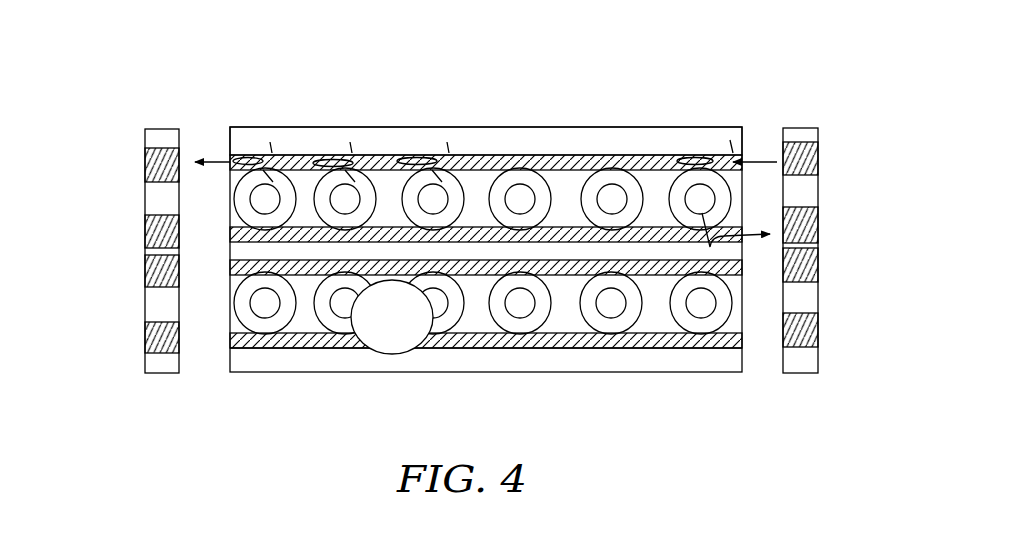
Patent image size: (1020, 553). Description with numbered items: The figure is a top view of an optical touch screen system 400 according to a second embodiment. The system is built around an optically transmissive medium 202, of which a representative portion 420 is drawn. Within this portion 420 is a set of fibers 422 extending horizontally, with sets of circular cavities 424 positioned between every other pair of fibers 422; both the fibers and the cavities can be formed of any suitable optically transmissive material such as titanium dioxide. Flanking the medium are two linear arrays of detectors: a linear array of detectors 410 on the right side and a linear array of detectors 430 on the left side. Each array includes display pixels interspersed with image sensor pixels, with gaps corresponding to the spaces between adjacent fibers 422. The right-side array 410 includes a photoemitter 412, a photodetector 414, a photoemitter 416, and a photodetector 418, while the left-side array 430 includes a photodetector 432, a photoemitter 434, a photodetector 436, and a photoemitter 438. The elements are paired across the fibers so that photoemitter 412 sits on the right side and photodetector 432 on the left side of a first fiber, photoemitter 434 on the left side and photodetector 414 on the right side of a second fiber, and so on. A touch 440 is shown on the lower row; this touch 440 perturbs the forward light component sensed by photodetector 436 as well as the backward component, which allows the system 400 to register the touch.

The optical touch screen system 400 is at (124, 39).
The optically transmissive medium 202 is at (707, 372).
The linear array of detectors 410 is at (798, 128).
The photoemitter 412 is at (812, 162).
The photodetector 414 is at (812, 225).
The photoemitter 416 is at (813, 265).
The photodetector 418 is at (813, 330).
The representative portion 420 is at (650, 127).
The fibers 422 is at (468, 221).
The circular cavities 424 is at (603, 176).
The linear array of detectors 430 is at (160, 128).
The photodetector 432 is at (150, 165).
The photoemitter 434 is at (150, 232).
The photodetector 436 is at (150, 270).
The photoemitter 438 is at (150, 337).
The touch 440 is at (402, 342).